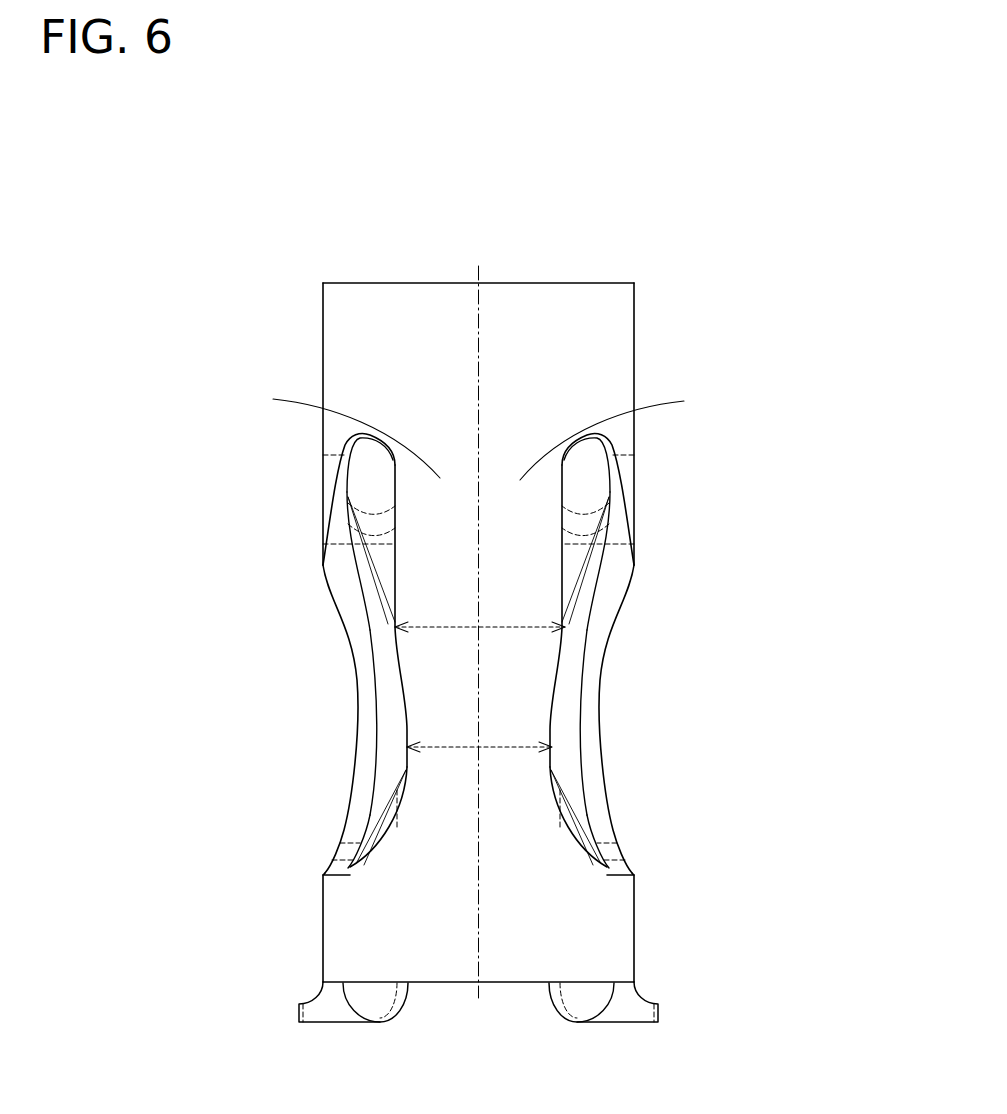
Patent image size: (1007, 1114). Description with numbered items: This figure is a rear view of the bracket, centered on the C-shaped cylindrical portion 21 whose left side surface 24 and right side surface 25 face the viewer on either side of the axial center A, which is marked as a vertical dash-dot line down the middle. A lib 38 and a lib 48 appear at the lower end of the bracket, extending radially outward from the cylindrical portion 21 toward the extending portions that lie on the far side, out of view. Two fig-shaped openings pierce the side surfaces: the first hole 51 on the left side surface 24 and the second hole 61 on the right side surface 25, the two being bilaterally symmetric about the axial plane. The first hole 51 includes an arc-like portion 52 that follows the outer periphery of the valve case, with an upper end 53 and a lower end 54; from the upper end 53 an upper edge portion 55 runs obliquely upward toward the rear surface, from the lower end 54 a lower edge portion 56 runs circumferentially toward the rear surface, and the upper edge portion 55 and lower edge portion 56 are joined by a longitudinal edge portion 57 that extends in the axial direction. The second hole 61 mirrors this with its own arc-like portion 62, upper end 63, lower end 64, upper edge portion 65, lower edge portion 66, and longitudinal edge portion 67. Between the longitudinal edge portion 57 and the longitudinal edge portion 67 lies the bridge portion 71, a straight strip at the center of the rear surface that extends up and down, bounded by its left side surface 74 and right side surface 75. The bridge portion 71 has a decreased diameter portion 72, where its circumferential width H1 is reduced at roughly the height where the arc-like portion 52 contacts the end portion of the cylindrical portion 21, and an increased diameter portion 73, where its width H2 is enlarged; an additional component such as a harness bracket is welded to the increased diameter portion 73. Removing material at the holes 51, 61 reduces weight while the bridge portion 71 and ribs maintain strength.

The cylindrical portion 21 is at (348, 280).
The left side surface 24 is at (587, 307).
The right side surface 25 is at (383, 307).
The axial center A is at (477, 303).
The width of the decreased diameter portion H1 is at (507, 767).
The width of the increased diameter portion H2 is at (512, 624).
The lib 38 is at (600, 1010).
The lib 48 is at (357, 1010).
The first hole 51 is at (634, 567).
The arc-like portion 52 is at (597, 722).
The upper end 53 is at (605, 625).
The lower end 54 is at (610, 835).
The upper edge portion 55 is at (622, 487).
The lower edge portion 56 is at (627, 866).
The longitudinal edge portion 57 is at (609, 543).
The second hole 61 is at (323, 567).
The arc-like portion 62 is at (360, 722).
The upper end 63 is at (340, 628).
The lower end 64 is at (347, 835).
The upper edge portion 65 is at (335, 487).
The lower edge portion 66 is at (330, 866).
The longitudinal edge portion 67 is at (348, 543).
The bridge portion 71 is at (556, 677).
The decreased diameter portion 72 is at (444, 767).
The increased diameter portion 73 is at (362, 599).
The left side surface of the bridge portion 74 is at (619, 432).
The right side surface of the bridge portion 75 is at (339, 431).